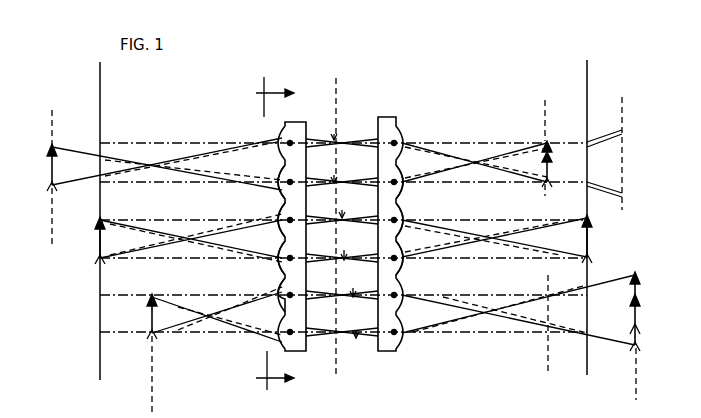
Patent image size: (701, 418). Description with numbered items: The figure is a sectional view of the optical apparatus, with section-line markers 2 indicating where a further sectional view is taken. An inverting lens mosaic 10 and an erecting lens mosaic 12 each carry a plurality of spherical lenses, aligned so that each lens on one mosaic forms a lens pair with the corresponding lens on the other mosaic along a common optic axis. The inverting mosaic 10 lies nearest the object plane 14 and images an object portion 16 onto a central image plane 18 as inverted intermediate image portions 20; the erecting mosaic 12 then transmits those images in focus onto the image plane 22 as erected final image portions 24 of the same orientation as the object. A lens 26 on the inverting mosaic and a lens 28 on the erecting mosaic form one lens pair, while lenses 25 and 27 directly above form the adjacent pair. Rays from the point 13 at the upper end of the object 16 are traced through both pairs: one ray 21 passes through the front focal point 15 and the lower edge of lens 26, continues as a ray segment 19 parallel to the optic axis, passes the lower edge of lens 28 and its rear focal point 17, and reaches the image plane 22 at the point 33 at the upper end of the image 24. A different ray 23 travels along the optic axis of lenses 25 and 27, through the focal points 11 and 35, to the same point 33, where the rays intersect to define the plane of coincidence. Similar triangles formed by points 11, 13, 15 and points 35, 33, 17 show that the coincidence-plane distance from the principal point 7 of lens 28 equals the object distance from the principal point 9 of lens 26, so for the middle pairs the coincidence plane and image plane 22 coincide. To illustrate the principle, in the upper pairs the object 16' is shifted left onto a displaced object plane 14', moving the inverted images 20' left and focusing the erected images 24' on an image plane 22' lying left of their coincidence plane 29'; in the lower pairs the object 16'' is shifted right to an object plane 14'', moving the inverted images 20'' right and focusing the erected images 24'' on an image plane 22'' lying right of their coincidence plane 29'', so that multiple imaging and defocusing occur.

The section line 2- 2 is at (270, 242).
The principal point of lens 28 7 is at (405, 262).
The principal point of lens 26 9 is at (305, 258).
The inverting lens mosaic 10 is at (295, 122).
The focal point 11 is at (246, 219).
The erecting lens mosaic 12 is at (387, 117).
The point at upper end of object 13 is at (105, 221).
The object plane 14 is at (80, 221).
The displaced object plane 14' is at (36, 177).
The displaced object plane 14'' is at (178, 375).
The front focal point 15 is at (237, 258).
The object portion 16 is at (85, 240).
The object 16' is at (37, 167).
The object 16'' is at (133, 316).
The rear focal point 17 is at (440, 258).
The central image plane 18 is at (337, 83).
The ray segment 19 is at (308, 262).
The inverted intermediate image portions 20 is at (352, 235).
The inverted real images 20' is at (352, 158).
The inverted real images 20'' is at (366, 313).
The ray 21 is at (216, 256).
The image plane 22 is at (600, 217).
The image plane 22' is at (524, 141).
The image plane 22'' is at (659, 374).
The ray 23 is at (178, 218).
The erected final image portion 24 is at (600, 239).
The erected images 24' is at (560, 164).
The erected images 24'' is at (653, 311).
The lens 25 is at (278, 215).
The lens 26 is at (281, 250).
The lens 27 is at (407, 214).
The lens 28 is at (406, 253).
The coincidence plane 29' is at (642, 148).
The coincidence plane 29'' is at (526, 325).
The point at upper end of image 33 is at (582, 218).
The focal point 35 is at (439, 222).